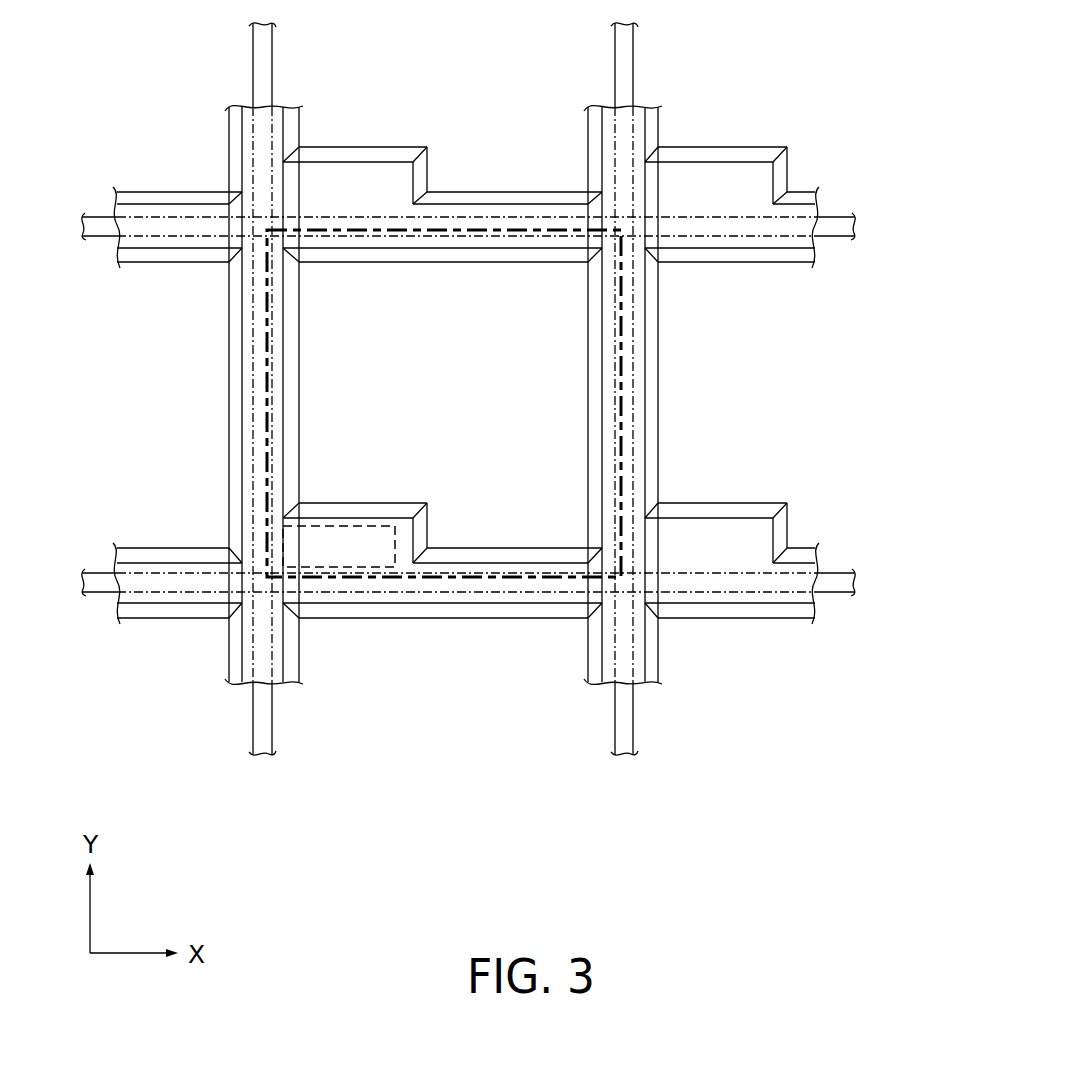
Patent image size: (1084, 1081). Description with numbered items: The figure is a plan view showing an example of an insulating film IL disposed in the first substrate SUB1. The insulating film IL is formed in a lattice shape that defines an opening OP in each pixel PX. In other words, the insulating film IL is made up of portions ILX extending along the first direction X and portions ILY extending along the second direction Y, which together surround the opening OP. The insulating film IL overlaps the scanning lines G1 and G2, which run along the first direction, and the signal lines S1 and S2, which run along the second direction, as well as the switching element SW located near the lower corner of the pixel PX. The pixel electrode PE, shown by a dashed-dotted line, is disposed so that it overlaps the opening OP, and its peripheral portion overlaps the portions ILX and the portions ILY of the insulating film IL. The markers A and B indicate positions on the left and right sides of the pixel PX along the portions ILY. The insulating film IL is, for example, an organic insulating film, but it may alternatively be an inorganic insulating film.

The first substrate SUB1 is at (815, 50).
The pixel PX is at (261, 223).
The opening OP is at (490, 286).
The insulating film IL is at (742, 148).
The portions extending along the first direction X ILX is at (775, 263).
The portions extending along the second direction Y ILY is at (232, 657).
The scanning line G1 is at (837, 573).
The scanning line G2 is at (855, 228).
The signal line S1 is at (258, 759).
The signal line S2 is at (617, 759).
The pixel electrode PE is at (622, 381).
The switching element SW is at (357, 525).
The section position A is at (215, 455).
The section position B is at (667, 455).